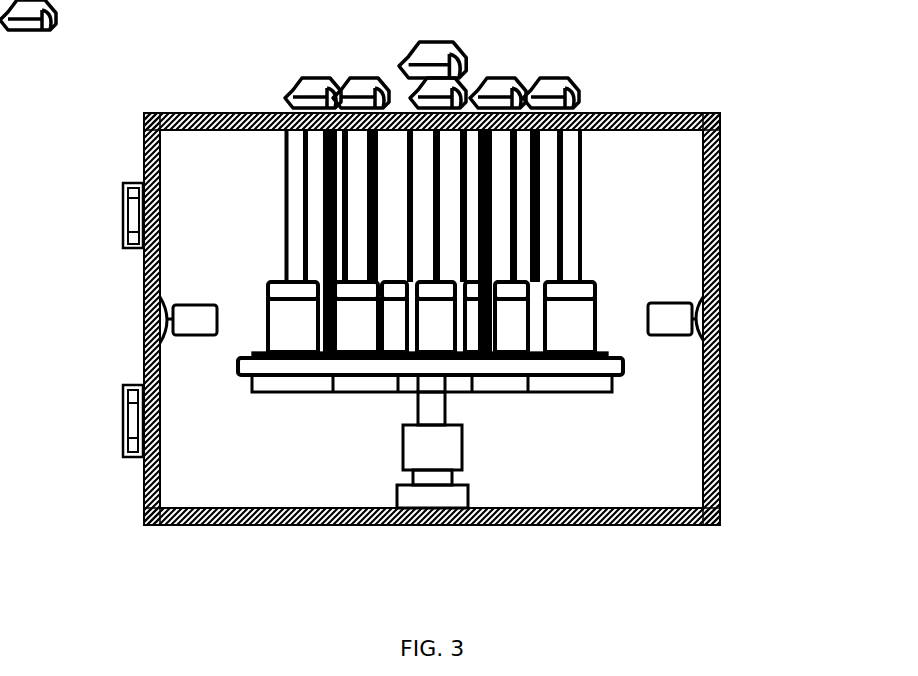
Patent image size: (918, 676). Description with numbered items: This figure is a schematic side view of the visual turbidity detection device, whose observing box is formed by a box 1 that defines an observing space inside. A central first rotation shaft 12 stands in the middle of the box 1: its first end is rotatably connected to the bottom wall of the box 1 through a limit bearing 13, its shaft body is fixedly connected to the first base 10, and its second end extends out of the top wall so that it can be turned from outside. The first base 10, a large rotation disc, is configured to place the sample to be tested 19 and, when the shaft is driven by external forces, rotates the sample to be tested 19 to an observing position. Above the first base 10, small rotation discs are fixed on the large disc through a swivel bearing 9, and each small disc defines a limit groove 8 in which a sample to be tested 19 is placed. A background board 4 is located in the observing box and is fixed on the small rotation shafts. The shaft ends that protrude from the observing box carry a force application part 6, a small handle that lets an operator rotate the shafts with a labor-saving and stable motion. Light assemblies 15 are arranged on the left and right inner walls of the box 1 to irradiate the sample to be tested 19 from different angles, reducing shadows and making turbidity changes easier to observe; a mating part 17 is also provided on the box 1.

The box 1 is at (718, 213).
The background board 4 is at (285, 270).
The force application part 6 is at (568, 92).
The limit groove 8 is at (252, 352).
The swivel bearing 9 is at (252, 380).
The first base 10 is at (623, 366).
The first rotation shaft 12 is at (443, 412).
The limit bearing 13 is at (408, 458).
The light assembly 15 is at (720, 327).
The mating part 17 is at (123, 185).
The sample to be tested 19 is at (598, 290).